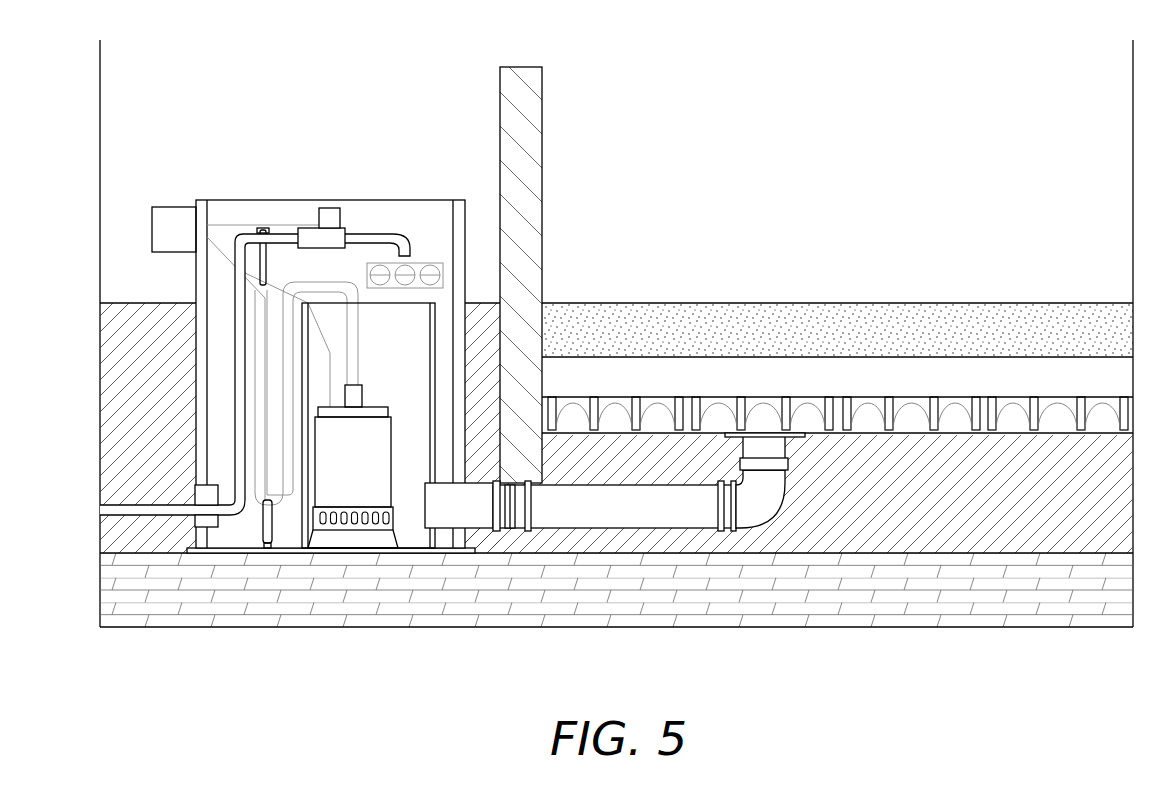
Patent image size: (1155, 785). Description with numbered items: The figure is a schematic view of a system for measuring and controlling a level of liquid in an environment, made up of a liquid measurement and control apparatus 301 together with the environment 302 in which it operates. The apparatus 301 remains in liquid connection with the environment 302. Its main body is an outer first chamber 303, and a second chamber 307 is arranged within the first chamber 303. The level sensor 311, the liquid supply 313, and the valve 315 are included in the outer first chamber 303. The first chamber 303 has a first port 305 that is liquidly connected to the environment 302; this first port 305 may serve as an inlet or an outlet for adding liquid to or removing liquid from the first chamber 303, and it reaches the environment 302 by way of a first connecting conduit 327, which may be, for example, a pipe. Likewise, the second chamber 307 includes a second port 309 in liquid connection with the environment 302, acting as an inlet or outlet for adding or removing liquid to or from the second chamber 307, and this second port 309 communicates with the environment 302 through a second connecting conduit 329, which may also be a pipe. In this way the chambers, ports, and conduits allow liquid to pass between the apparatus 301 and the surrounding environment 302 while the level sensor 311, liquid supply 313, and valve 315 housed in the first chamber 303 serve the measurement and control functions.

The apparatus 301 is at (221, 80).
The environment 302 is at (927, 80).
The first chamber 303 is at (218, 398).
The first port 305 is at (446, 519).
The second chamber 307 is at (412, 323).
The second port 309 is at (475, 519).
The level sensor 311 is at (270, 528).
The liquid supply 313 is at (384, 233).
The valve 315 is at (328, 208).
The first connecting conduit 327 is at (613, 517).
The second connecting conduit 329 is at (612, 655).